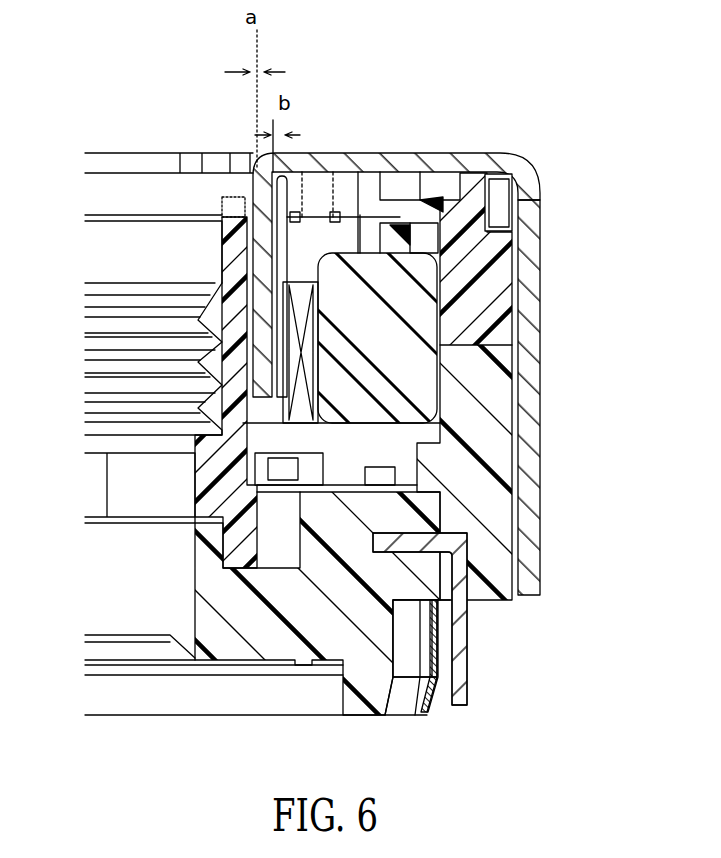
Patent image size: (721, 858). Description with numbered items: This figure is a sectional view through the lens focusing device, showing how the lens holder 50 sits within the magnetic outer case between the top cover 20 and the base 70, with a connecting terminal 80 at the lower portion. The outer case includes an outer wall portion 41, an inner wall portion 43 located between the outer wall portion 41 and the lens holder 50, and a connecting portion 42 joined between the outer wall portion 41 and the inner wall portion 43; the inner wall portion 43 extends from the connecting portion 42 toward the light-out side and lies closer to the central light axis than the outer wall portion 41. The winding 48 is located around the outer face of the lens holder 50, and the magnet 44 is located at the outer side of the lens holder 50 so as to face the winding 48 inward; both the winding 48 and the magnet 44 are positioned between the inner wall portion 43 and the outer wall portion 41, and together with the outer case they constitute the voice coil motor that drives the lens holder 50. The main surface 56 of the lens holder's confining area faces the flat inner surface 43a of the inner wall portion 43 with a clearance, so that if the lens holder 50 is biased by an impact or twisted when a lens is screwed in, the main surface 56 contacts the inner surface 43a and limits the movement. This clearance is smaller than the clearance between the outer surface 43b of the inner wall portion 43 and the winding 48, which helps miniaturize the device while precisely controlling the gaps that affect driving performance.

The top cover 20 is at (537, 208).
The outer wall portion 41 is at (538, 262).
The connecting portion 42 is at (320, 305).
The inner wall portion 43 is at (228, 140).
The inner surface 43a is at (248, 295).
The outer surface 43b is at (282, 240).
The magnet 44 is at (410, 337).
The winding 48 is at (494, 176).
The lens holder 50 is at (210, 473).
The main surface 56 is at (245, 378).
The base 70 is at (490, 505).
The connecting terminal 80 is at (457, 657).